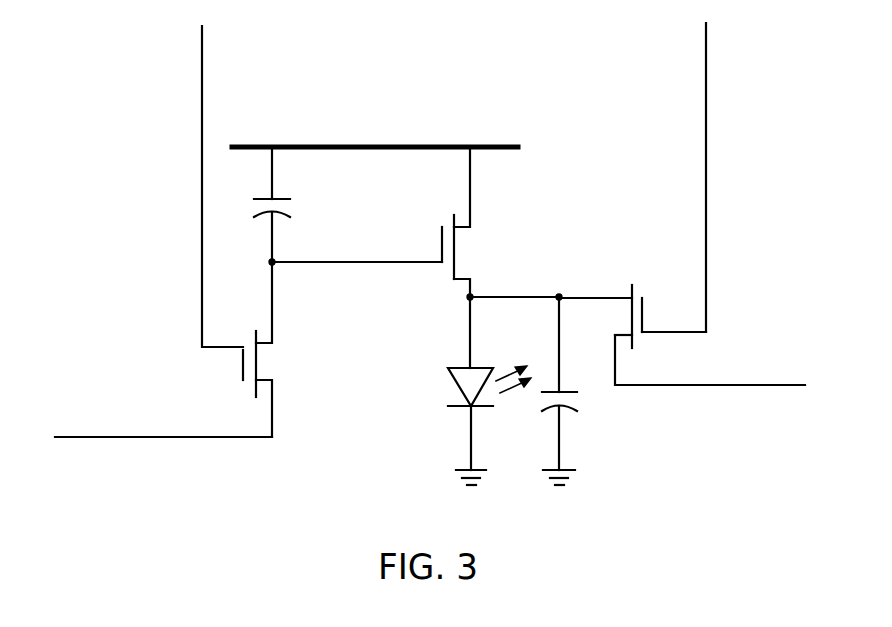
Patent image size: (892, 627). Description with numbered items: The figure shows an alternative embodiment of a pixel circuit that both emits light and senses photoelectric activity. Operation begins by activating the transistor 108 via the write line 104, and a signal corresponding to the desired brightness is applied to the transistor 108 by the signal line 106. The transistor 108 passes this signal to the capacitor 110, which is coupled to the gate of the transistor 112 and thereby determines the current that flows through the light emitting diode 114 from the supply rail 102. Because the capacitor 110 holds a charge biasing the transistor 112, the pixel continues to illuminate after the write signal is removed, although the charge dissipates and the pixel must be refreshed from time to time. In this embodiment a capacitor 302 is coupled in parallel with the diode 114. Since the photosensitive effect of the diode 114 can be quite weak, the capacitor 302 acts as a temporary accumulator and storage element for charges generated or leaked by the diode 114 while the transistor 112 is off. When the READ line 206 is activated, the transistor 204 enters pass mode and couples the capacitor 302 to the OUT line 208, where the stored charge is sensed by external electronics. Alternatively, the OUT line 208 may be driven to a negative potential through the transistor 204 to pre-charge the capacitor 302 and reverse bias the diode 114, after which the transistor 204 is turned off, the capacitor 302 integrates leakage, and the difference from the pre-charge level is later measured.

The supply rail 102 is at (372, 147).
The write line 104 is at (200, 36).
The signal line 106 is at (80, 438).
The transistor 108 is at (268, 363).
The capacitor 110 is at (294, 211).
The transistor 112 is at (468, 246).
The light emitting diode 114 is at (481, 368).
The transistor 204 is at (640, 295).
The READ line 206 is at (707, 43).
The OUT line 208 is at (773, 386).
The capacitor 302 is at (574, 392).